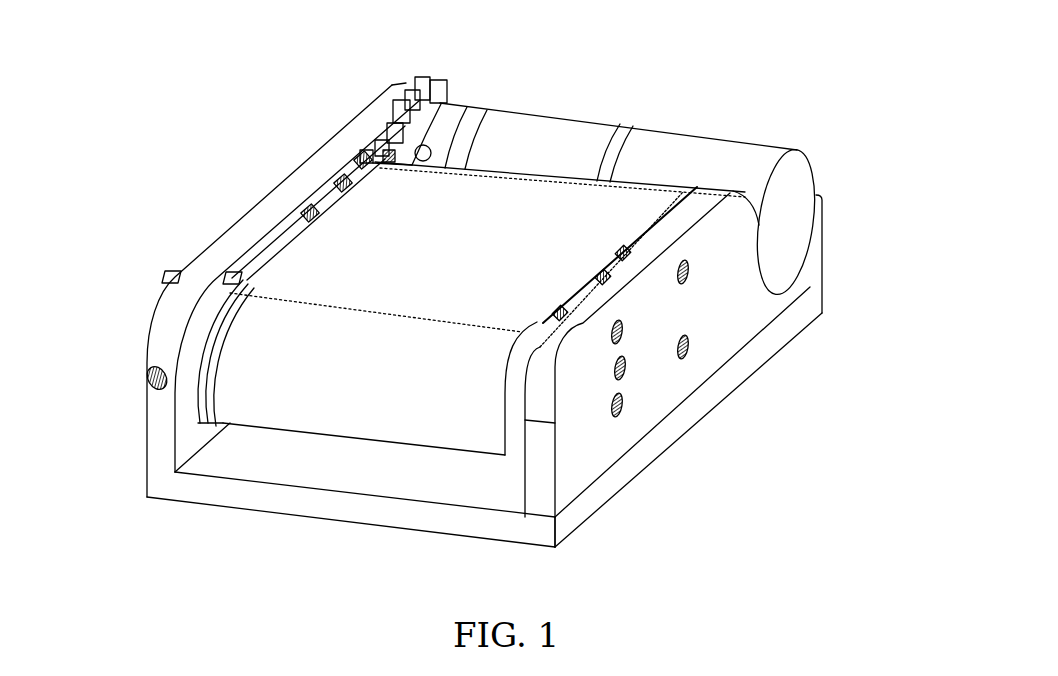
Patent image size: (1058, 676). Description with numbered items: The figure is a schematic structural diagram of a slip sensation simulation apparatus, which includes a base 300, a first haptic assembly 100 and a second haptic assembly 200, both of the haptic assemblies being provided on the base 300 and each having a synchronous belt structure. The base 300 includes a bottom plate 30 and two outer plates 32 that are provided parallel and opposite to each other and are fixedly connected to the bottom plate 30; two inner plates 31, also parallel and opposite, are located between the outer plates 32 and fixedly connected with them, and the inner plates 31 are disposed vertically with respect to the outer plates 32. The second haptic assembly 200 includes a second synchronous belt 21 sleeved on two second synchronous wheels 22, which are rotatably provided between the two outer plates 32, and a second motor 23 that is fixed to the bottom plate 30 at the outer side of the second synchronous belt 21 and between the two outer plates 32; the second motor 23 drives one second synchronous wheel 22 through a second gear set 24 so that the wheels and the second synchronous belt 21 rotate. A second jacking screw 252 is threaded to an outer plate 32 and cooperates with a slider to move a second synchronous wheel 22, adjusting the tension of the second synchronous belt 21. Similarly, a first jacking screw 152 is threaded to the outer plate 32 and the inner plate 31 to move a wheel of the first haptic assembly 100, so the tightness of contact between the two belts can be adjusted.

The second haptic assembly 200 is at (742, 123).
The second synchronous belt 21 is at (547, 252).
The second motor 23 is at (788, 188).
The second synchronous wheel 22 is at (195, 330).
The second gear set 24 is at (410, 149).
The inner plate 31 is at (315, 212).
The outer plate 32 is at (158, 465).
The bottom plate 30 is at (265, 487).
The second jacking screw 252 is at (150, 388).
The first haptic assembly 100 is at (597, 285).
The first jacking screw 152 is at (627, 368).
The base 300 is at (658, 512).